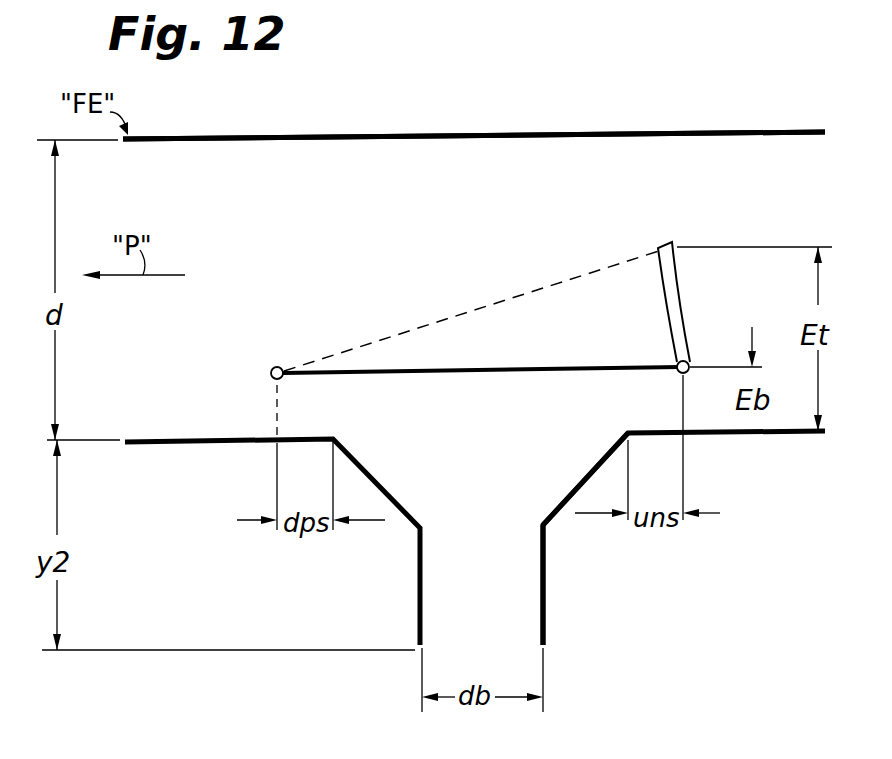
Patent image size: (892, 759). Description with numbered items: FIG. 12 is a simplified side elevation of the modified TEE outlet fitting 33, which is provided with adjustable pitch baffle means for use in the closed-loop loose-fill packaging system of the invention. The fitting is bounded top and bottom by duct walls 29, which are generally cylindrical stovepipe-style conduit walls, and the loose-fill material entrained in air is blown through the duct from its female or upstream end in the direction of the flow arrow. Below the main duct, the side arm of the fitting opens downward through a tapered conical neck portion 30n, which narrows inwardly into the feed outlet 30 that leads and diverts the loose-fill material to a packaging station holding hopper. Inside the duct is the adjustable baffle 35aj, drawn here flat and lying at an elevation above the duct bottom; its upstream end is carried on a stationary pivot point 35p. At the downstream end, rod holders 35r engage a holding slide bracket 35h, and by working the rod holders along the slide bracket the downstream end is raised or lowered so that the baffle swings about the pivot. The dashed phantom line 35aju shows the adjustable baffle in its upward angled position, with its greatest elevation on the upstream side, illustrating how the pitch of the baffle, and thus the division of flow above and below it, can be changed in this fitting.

The duct walls 29 is at (282, 136).
The modified TEE outlet fitting with adjustable baffle means 33 is at (528, 112).
The adjustable baffle 35aj is at (447, 378).
The adjustable baffle in upward angled position 35aju is at (440, 322).
The stationary pivot point 35p is at (268, 376).
The rod holders 35r is at (676, 364).
The holding slide bracket 35h is at (684, 284).
The tapered conical neck portion 30n is at (566, 508).
The feed outlet 30 is at (546, 604).